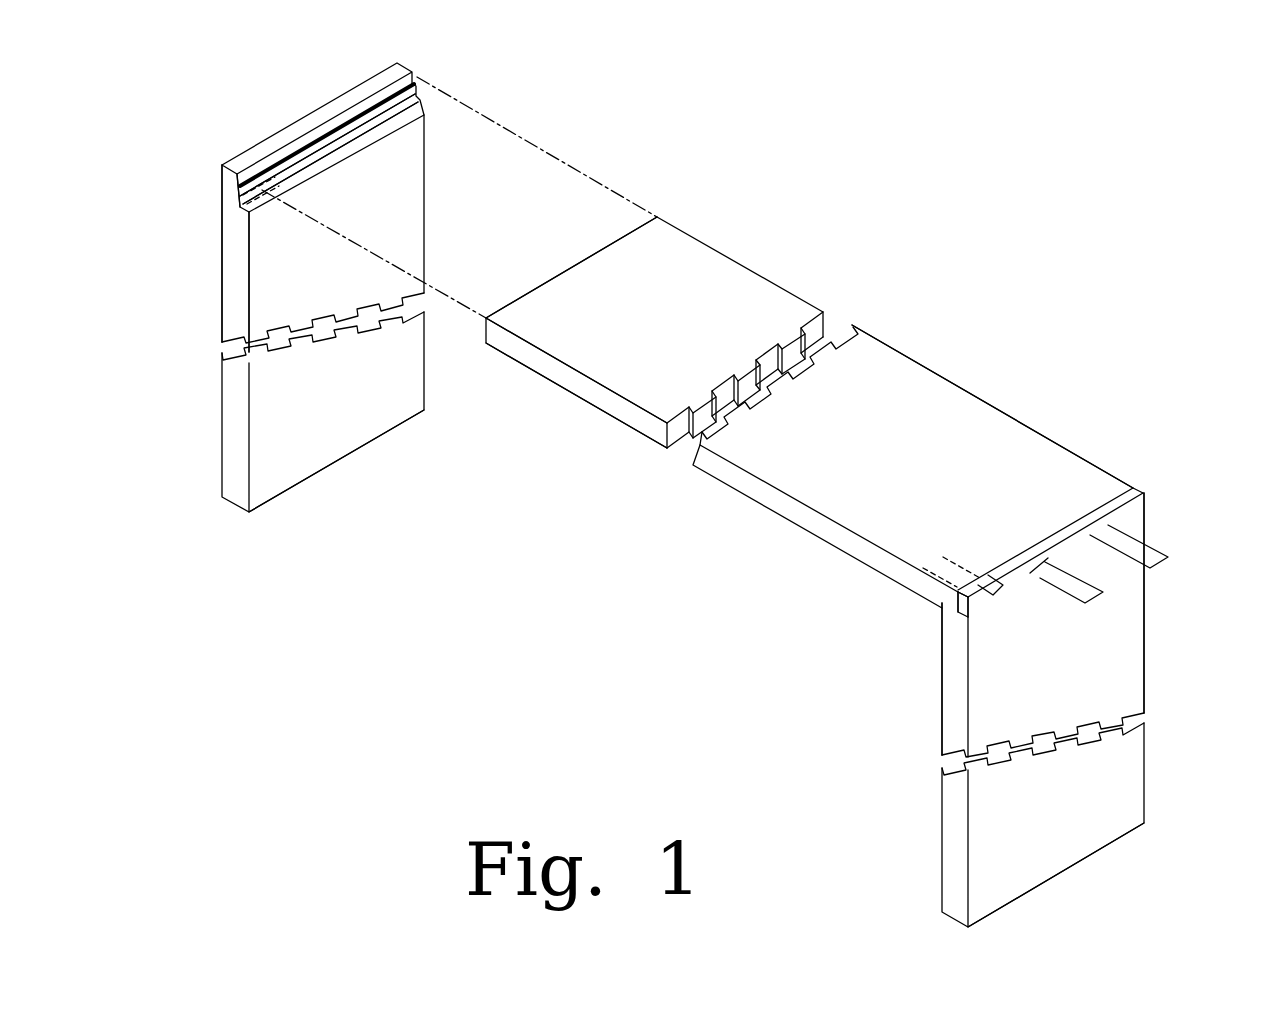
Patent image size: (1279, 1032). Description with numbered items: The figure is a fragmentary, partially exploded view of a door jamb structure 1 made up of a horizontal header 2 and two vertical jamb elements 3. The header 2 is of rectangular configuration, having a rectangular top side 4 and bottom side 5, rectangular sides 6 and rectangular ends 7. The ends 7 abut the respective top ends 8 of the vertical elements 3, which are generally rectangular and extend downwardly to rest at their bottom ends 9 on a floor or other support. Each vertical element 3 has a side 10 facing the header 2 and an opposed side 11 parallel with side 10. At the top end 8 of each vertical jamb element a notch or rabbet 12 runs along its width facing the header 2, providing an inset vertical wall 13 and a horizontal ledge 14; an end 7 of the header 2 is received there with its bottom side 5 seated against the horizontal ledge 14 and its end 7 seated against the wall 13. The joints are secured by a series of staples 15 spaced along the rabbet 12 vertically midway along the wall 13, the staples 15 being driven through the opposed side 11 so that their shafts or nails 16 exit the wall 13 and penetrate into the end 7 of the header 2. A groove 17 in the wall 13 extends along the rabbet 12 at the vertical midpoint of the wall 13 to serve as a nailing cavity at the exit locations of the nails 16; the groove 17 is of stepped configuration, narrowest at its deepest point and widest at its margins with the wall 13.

The door jamb structure 1 is at (523, 553).
The header 2 is at (918, 466).
The vertical jamb elements 3 is at (683, 521).
The top side 4 is at (542, 262).
The bottom side 5 is at (576, 395).
The sides 6 is at (809, 403).
The ends 7 is at (841, 403).
The top ends 8 is at (716, 330).
The bottom ends 9 is at (719, 668).
The side 10 is at (393, 193).
The opposed side 11 is at (1200, 668).
The rabbet 12 is at (993, 672).
The inset vertical wall 13 is at (943, 600).
The horizontal ledge 14 is at (913, 662).
The staples 15 is at (719, 371).
The nails 16 is at (1187, 513).
The groove 17 is at (997, 632).